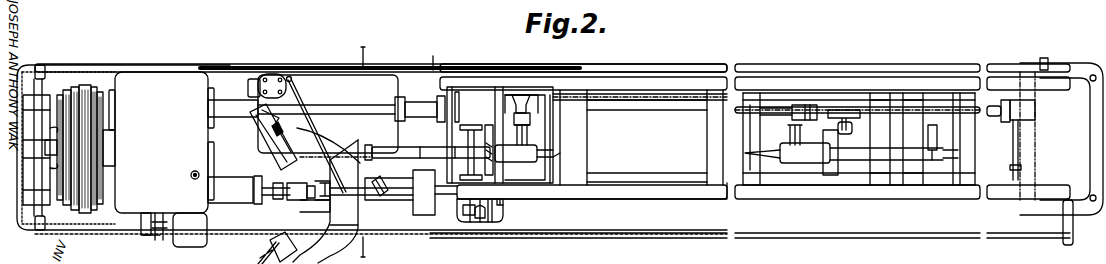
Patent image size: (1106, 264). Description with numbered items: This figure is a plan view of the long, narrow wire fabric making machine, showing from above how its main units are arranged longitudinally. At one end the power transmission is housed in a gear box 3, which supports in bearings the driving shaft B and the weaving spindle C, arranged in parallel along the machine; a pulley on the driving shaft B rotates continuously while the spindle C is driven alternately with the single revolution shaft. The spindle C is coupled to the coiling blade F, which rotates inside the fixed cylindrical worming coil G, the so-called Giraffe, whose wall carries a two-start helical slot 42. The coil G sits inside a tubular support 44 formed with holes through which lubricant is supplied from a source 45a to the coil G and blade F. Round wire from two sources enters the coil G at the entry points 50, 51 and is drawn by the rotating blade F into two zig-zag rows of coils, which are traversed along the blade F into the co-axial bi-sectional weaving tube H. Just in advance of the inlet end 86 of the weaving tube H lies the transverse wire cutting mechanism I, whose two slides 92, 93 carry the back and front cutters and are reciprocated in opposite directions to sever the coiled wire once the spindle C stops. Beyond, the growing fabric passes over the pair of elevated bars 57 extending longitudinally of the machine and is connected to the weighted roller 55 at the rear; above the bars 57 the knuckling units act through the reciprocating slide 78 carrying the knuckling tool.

The gear box 3 is at (161, 159).
The driving shaft B is at (106, 147).
The weaving spindle C is at (270, 192).
The worming coil G is at (302, 196).
The entry point 50 is at (311, 198).
The entry point 51 is at (308, 185).
The tubular support 44 is at (326, 185).
The helical slot 42 is at (380, 183).
The lubricant source 45a is at (328, 150).
The reciprocating slide 78 is at (366, 148).
The weighted roller 55 is at (664, 65).
The elevated bars 57 is at (693, 83).
The inlet end 86 is at (500, 203).
The coiling blade F is at (408, 196).
The wire cutting mechanism I is at (470, 216).
The slide 93 is at (478, 216).
The slide 92 is at (488, 210).
The weaving tube H is at (700, 200).